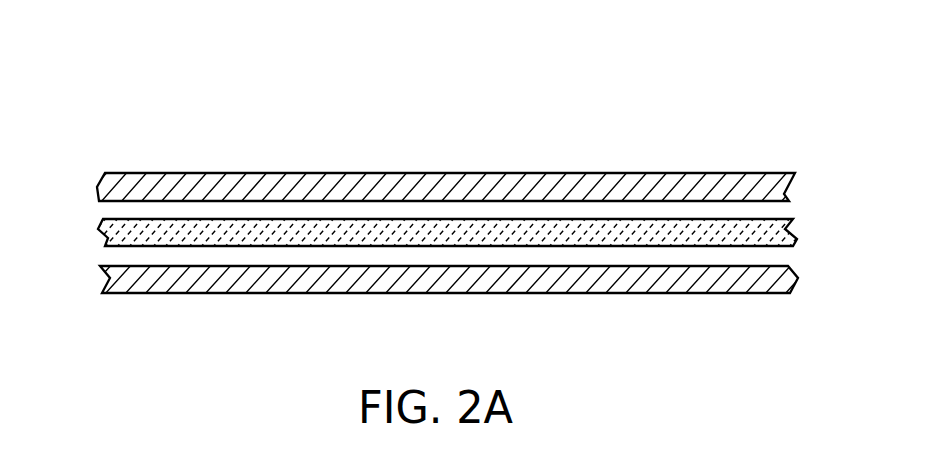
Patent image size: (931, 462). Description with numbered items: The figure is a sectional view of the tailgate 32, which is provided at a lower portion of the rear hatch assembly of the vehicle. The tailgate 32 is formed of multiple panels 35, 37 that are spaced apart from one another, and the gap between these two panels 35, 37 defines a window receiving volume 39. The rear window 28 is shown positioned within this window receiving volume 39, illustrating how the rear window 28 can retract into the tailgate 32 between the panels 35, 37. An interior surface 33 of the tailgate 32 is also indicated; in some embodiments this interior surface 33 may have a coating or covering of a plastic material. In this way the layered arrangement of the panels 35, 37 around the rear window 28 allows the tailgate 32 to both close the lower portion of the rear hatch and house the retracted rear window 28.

The tailgate 32 is at (448, 206).
The interior surface 33 is at (258, 172).
The panel 37 is at (585, 173).
The window receiving volume 39 is at (362, 208).
The rear window 28 is at (332, 233).
The panel 35 is at (582, 288).